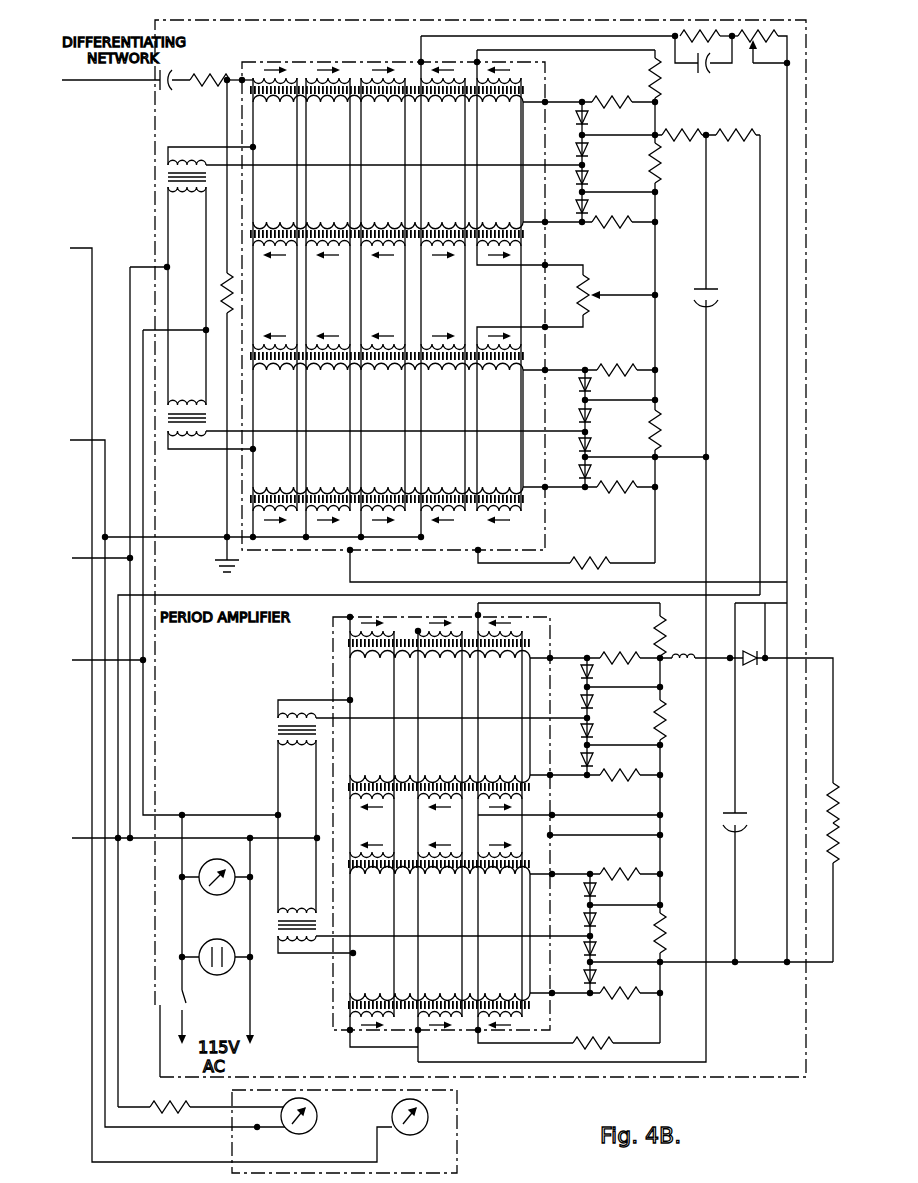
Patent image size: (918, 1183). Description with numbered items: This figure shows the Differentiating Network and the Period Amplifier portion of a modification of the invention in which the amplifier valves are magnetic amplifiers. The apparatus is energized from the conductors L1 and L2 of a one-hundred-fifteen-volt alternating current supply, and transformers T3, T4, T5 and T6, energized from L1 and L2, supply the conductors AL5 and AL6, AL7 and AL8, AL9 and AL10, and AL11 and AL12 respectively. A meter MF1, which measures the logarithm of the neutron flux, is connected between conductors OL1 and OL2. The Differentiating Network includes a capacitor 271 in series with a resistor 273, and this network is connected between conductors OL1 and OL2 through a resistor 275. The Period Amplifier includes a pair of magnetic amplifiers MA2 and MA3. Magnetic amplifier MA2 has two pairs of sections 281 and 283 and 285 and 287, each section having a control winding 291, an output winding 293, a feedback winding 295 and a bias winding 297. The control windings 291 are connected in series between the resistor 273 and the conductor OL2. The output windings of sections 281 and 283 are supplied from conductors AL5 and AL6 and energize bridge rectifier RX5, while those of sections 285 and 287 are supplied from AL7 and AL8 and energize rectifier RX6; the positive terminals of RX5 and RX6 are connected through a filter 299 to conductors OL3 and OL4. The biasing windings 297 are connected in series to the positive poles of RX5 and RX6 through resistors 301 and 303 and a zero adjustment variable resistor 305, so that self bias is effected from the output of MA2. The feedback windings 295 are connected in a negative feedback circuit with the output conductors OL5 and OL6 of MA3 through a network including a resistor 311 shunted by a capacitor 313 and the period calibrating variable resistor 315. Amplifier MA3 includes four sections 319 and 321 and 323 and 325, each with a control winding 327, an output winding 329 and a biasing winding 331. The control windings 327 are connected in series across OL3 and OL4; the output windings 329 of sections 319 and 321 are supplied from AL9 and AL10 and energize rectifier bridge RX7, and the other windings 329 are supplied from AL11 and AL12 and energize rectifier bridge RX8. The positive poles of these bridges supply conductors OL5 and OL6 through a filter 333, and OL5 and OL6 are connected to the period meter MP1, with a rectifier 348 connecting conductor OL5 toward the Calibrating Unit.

The conductor OL1 is at (101, 82).
The conductor OL2 is at (104, 440).
The conductor OL3 is at (760, 185).
The conductor OL4 is at (708, 516).
The output conductor OL5 is at (739, 654).
The output conductor OL6 is at (766, 964).
The capacitor 271 is at (165, 90).
The resistor 273 is at (185, 74).
The resistor 275 is at (223, 293).
The section 281 is at (510, 126).
The section 283 is at (510, 214).
The section 285 is at (510, 394).
The section 287 is at (510, 479).
The control winding 291 is at (289, 76).
The output winding 293 is at (453, 220).
The feedback winding 295 is at (463, 60).
The bias winding 297 is at (523, 78).
The filter 299 is at (697, 275).
The resistor 301 is at (649, 70).
The resistor 303 is at (596, 559).
The zero adjustment variable resistor 305 is at (592, 269).
The resistor 311 is at (729, 65).
The capacitor 313 is at (704, 75).
The period calibrating variable resistor 315 is at (799, 36).
The section 319 is at (510, 681).
The section 321 is at (510, 769).
The section 323 is at (510, 899).
The section 325 is at (510, 984).
The control winding 327 is at (385, 632).
The output winding 329 is at (393, 661).
The biasing winding 331 is at (519, 634).
The filter 333 is at (704, 831).
The rectifier 348 is at (758, 664).
The conductor AL5 is at (201, 146).
The conductor AL6 is at (345, 162).
The conductor AL7 is at (213, 455).
The conductor AL8 is at (346, 428).
The conductor AL9 is at (300, 698).
The conductor AL10 is at (463, 717).
The conductor AL11 is at (313, 955).
The conductor AL12 is at (463, 932).
The transformer T3 is at (193, 213).
The transformer T4 is at (198, 400).
The transformer T5 is at (265, 738).
The transformer T6 is at (275, 929).
The bridge rectifier RX5 is at (630, 170).
The rectifier RX6 is at (635, 438).
The rectifier bridge RX7 is at (638, 723).
The rectifier bridge RX8 is at (642, 938).
The magnetic amplifier MA2 is at (321, 557).
The magnetic amplifier MA3 is at (333, 650).
The conductor L1 is at (147, 690).
The conductor L2 is at (133, 707).
The period meter MP1 is at (308, 1104).
The meter MF1 is at (423, 1136).